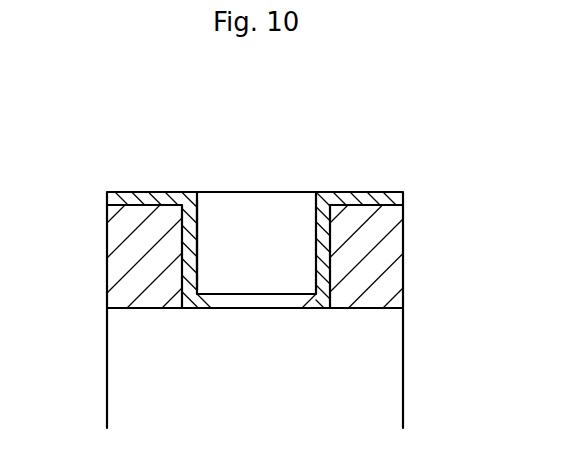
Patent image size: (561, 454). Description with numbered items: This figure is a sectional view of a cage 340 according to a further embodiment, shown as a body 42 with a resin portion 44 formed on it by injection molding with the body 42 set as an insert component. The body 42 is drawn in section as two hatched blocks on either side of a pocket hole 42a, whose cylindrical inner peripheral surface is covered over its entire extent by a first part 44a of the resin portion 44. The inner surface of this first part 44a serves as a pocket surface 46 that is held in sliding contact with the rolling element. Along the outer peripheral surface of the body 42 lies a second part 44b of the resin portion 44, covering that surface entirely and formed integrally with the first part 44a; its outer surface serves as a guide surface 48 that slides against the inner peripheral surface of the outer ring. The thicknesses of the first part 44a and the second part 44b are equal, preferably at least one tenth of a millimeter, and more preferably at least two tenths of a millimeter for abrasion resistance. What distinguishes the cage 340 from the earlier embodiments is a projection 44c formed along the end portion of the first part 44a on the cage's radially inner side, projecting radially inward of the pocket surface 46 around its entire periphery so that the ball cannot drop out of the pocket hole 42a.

The cage 340 is at (384, 189).
The body 42 is at (125, 260).
The pocket hole 42a is at (264, 232).
The resin portion 44 is at (108, 197).
The first part 44a is at (192, 250).
The second part 44b is at (139, 200).
The projection 44c is at (302, 300).
The pocket surface 46 is at (198, 235).
The guide surface 48 is at (349, 198).